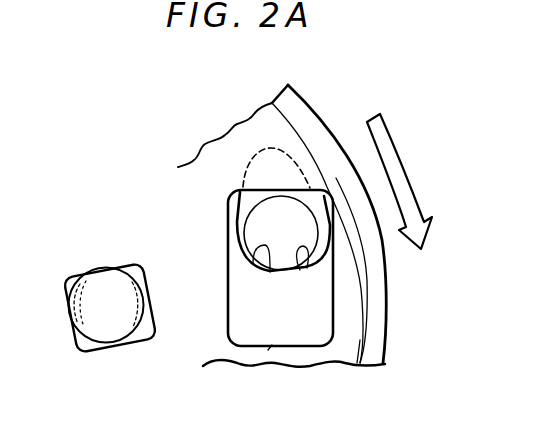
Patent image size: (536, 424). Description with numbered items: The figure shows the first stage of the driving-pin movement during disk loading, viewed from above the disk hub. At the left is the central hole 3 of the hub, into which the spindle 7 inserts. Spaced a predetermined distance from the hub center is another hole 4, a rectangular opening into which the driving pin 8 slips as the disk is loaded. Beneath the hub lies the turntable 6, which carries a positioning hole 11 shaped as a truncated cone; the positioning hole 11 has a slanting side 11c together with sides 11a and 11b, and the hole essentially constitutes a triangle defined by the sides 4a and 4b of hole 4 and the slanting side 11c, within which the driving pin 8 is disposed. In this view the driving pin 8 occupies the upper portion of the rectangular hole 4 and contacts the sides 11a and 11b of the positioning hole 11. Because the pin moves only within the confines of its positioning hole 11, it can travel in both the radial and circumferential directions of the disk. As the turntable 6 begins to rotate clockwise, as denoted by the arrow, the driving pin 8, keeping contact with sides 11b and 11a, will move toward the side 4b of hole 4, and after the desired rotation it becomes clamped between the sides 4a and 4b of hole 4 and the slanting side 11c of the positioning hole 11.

The hole 3 is at (133, 268).
The hole 4 is at (303, 330).
The side 4a is at (357, 363).
The side 4b is at (268, 350).
The turntable 6 is at (381, 282).
The spindle 7 is at (97, 318).
The driving pin 8 is at (300, 220).
The positioning hole 11 is at (276, 149).
The side 11a is at (297, 268).
The side 11b is at (267, 272).
The slanting side 11c is at (244, 176).